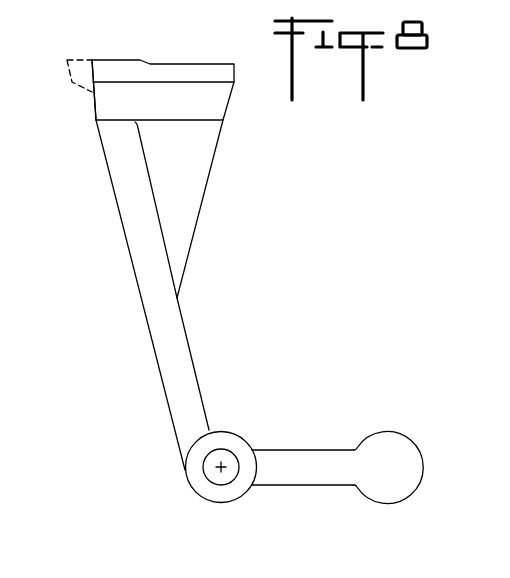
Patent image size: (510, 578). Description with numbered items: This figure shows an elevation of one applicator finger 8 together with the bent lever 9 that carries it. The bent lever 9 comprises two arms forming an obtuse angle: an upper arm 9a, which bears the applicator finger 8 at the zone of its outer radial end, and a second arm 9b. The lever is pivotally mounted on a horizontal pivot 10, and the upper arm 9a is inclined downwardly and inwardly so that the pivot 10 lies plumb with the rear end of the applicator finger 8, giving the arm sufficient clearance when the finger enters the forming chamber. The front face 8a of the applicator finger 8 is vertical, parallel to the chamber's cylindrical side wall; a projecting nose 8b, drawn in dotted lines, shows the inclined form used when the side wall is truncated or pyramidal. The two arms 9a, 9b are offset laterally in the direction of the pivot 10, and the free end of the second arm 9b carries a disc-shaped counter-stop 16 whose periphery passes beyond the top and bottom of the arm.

The applicator finger 8 is at (183, 67).
The front face of the applicator finger 8a is at (92, 93).
The projecting nose 8b is at (80, 60).
The bent lever 9 is at (156, 377).
The upper arm of the bent lever 9a is at (173, 312).
The second arm of the bent lever 9b is at (303, 450).
The horizontal pivot 10 is at (222, 462).
The counter-stop 16 is at (388, 442).